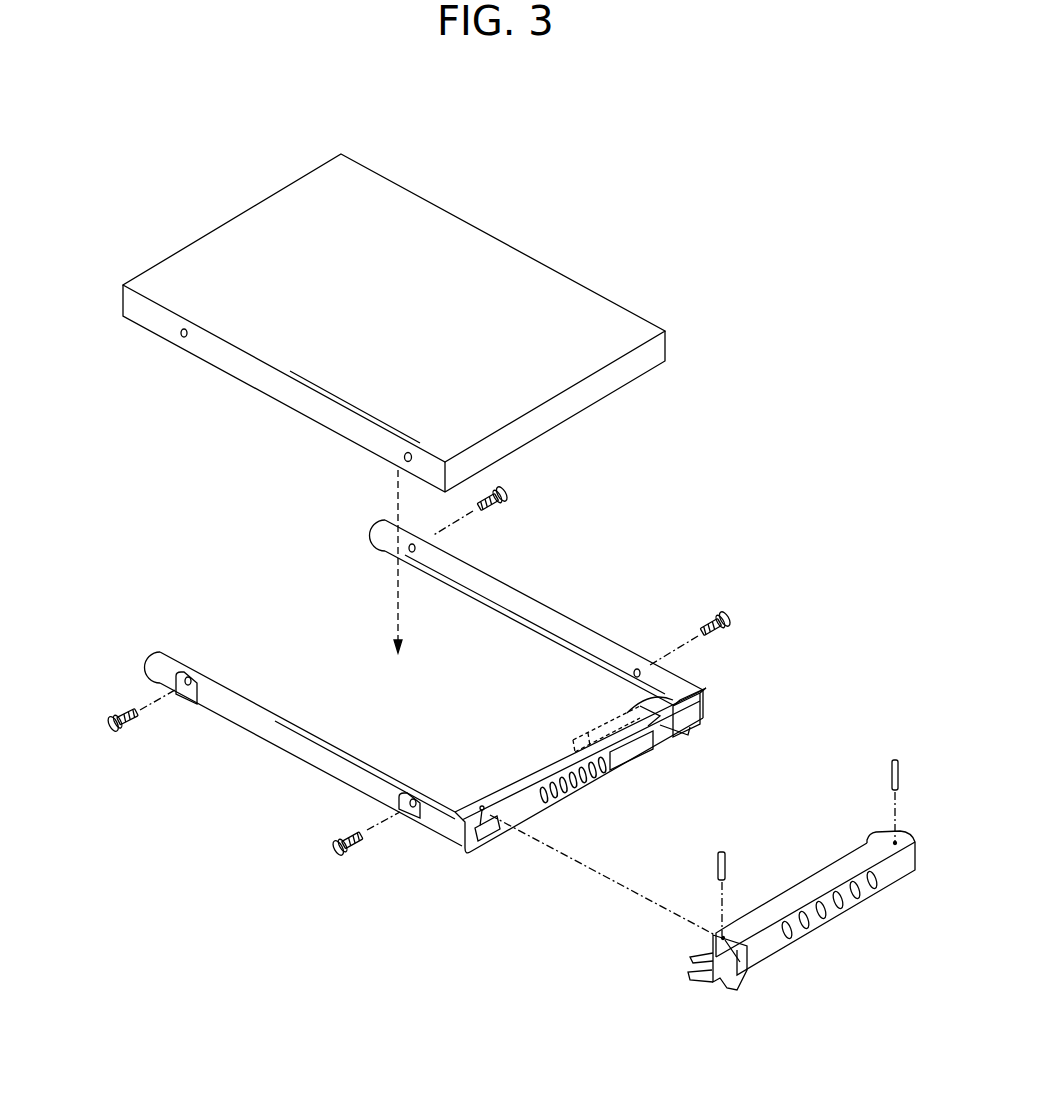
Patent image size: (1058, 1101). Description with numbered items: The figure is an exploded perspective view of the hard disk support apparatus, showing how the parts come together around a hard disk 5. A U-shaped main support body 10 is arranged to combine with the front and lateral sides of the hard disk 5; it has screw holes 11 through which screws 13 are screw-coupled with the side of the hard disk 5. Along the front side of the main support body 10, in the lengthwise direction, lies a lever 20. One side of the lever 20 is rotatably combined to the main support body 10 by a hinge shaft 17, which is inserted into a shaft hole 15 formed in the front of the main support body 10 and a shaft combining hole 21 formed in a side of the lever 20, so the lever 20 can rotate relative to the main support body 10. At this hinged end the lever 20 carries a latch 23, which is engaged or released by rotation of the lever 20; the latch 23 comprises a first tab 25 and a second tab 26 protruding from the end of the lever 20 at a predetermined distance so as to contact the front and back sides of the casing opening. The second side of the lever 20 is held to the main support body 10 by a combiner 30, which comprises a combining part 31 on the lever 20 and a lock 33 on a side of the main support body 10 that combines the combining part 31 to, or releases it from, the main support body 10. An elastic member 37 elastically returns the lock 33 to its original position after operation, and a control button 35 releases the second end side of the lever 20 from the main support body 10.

The hard disk 5 is at (500, 241).
The main support body 10 is at (443, 828).
The screw hole 11 is at (397, 890).
The screw 13 is at (508, 498).
The shaft hole 15 is at (483, 852).
The hinge shaft 17 is at (727, 863).
The lever 20 is at (803, 933).
The shaft combining hole 21 is at (737, 950).
The latch 23 is at (719, 1018).
The first tab 25 is at (695, 988).
The second tab 26 is at (727, 987).
The combiner 30 is at (735, 765).
The combining part 31 is at (862, 801).
The lock 33 is at (672, 728).
The control button 35 is at (695, 714).
The elastic member 37 is at (653, 737).